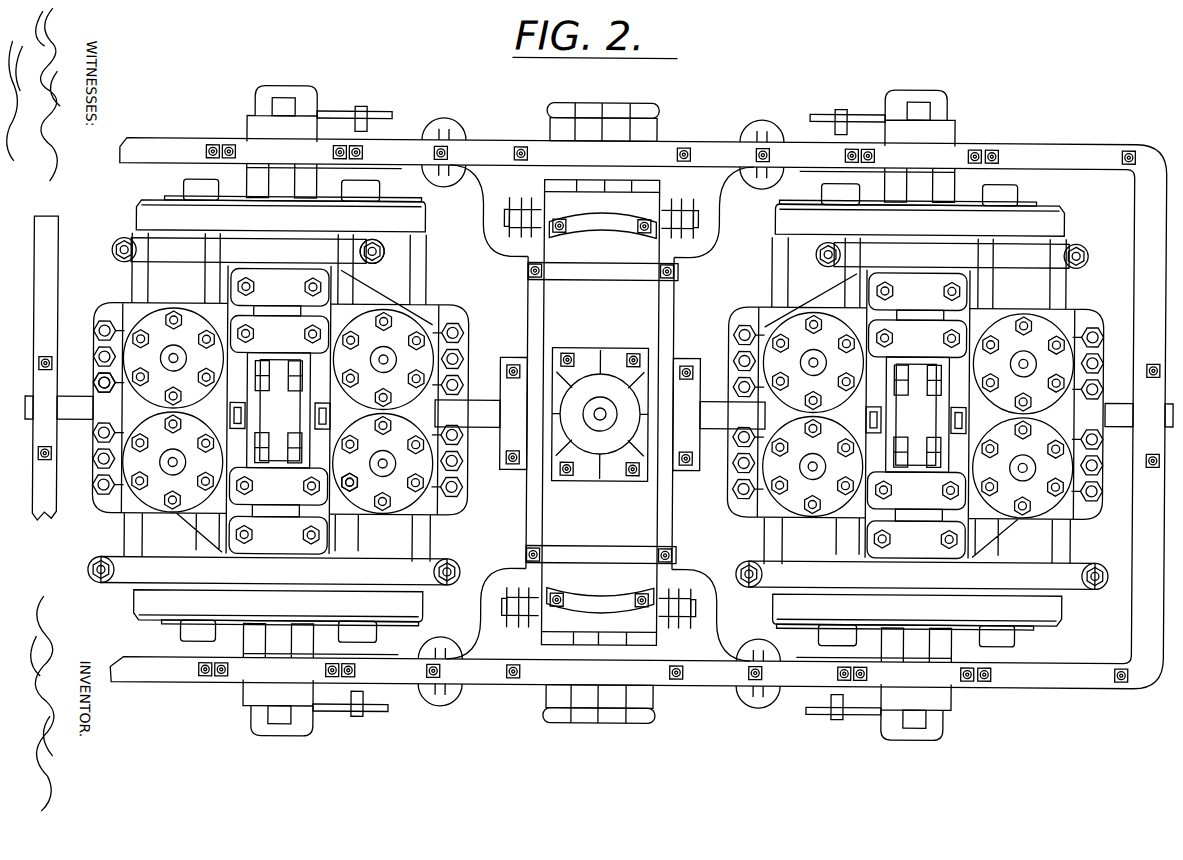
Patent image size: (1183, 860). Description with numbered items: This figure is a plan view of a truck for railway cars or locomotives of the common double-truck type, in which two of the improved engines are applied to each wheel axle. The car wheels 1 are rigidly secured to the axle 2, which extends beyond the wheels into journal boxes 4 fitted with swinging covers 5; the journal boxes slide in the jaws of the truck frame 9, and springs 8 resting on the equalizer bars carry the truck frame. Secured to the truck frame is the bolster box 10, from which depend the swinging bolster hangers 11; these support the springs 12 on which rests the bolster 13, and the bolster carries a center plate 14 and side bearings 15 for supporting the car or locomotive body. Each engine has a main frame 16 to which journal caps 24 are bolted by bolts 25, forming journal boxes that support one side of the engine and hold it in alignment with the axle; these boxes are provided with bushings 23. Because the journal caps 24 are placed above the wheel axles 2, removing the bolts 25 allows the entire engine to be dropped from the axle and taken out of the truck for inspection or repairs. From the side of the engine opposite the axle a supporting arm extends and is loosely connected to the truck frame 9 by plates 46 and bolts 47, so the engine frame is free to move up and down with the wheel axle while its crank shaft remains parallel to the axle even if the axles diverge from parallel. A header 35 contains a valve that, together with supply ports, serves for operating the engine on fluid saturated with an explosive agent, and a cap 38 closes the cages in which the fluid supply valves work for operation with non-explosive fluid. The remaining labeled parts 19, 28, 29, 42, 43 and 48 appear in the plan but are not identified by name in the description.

The car wheels 1 is at (424, 210).
The axle 2 is at (300, 412).
The journal boxes 4 is at (253, 118).
The swinging covers 5 is at (290, 736).
The springs 8 is at (405, 132).
The truck frame 9 is at (158, 140).
The bolster box 10 is at (527, 305).
The swinging bolster hangers 11 is at (518, 200).
The springs 12 is at (659, 106).
The bolster 13 is at (660, 526).
The center plate 14 is at (580, 482).
The side bearings 15 is at (575, 592).
The engine main frame 16 is at (438, 300).
The gear wheel 19 is at (405, 404).
The bushings 23 is at (280, 308).
The journal caps 24 is at (272, 516).
The bolts 25 is at (940, 537).
The bolt 28 is at (360, 486).
The tie bar 29 is at (74, 424).
The header 35 is at (300, 412).
The cap 38 is at (466, 375).
The tie rod end 42 is at (384, 255).
The tie rod 43 is at (111, 250).
The plates 46 is at (93, 386).
The bolts 47 is at (92, 340).
The bolt 48 is at (500, 462).